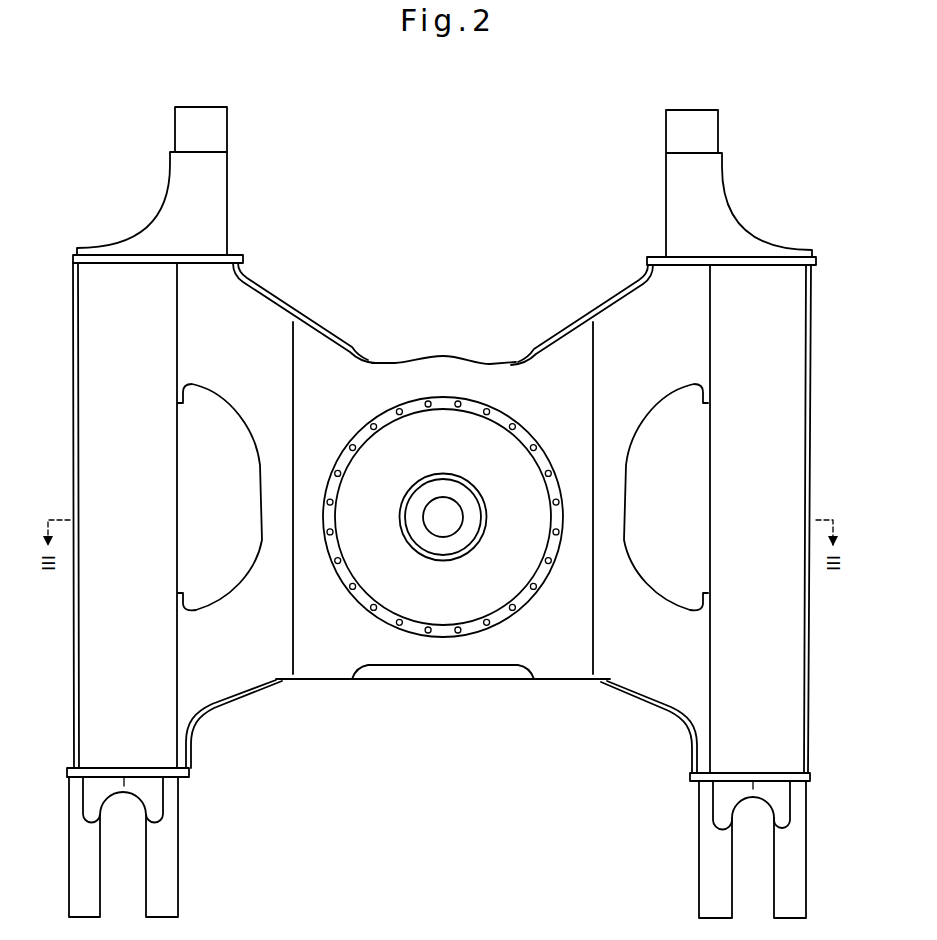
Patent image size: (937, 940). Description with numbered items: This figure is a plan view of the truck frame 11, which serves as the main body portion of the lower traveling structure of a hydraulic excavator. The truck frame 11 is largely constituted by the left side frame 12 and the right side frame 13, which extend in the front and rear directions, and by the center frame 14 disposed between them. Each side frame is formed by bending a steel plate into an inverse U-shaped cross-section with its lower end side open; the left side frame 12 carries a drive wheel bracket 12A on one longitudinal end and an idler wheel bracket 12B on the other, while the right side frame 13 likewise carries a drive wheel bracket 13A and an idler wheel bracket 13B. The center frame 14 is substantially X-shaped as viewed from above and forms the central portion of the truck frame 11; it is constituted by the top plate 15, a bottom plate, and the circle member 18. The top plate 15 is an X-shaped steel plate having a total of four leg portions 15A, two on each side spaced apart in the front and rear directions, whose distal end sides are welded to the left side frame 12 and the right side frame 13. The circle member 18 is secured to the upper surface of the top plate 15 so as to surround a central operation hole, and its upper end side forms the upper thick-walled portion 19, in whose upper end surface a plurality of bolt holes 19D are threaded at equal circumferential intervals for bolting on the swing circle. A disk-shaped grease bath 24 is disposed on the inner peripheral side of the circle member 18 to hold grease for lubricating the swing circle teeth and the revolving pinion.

The truck frame 11 is at (440, 730).
The left side frame 12 is at (793, 421).
The drive wheel bracket 12A is at (718, 190).
The idler wheel bracket 12B is at (708, 868).
The right side frame 13 is at (95, 425).
The drive wheel bracket 13A is at (175, 186).
The idler wheel bracket 13B is at (168, 862).
The center frame 14 is at (443, 348).
The top plate 15 is at (342, 642).
The leg portion 15A is at (240, 320).
The circle member 18 is at (382, 400).
The upper thick-walled portion 19 is at (410, 630).
The bolt holes 19D is at (325, 498).
The grease bath 24 is at (472, 602).